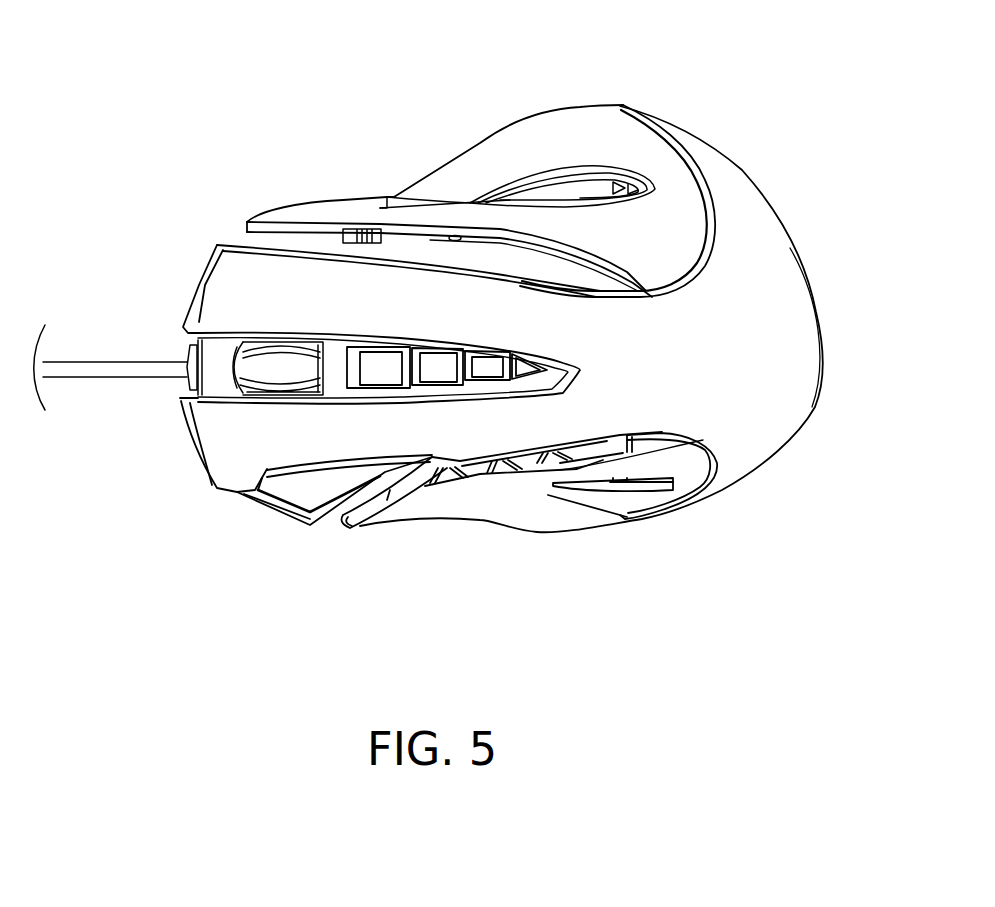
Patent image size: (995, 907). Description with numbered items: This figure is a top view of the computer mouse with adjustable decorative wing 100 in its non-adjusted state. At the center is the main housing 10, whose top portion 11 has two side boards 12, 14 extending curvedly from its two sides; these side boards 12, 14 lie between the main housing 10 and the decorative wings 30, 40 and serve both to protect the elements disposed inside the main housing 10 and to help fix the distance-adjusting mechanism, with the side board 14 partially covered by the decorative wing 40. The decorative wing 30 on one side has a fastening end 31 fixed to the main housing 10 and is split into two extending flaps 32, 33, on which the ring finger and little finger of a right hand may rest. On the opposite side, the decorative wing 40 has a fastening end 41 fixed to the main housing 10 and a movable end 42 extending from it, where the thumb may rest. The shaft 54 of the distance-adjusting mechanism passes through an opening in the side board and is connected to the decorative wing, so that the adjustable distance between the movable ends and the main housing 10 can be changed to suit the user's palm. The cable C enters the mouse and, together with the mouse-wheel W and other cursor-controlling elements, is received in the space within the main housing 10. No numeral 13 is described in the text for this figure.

The computer mouse with adjustable decorative wing 100 is at (113, 150).
The main housing 10 is at (770, 420).
The top portion 11 is at (667, 360).
The side board 12 is at (513, 262).
The side vent window 13 is at (389, 368).
The side board 14 is at (280, 510).
The decorative wing 30 is at (538, 113).
The fastening end 31 is at (681, 176).
The extending flap 32 is at (447, 180).
The extending flap 33 is at (313, 205).
The shaft 54 is at (376, 234).
The decorative wing 40 is at (503, 531).
The fastening end 41 is at (600, 507).
The movable end 42 is at (377, 527).
The cable C is at (110, 367).
The mouse-wheel W is at (250, 368).